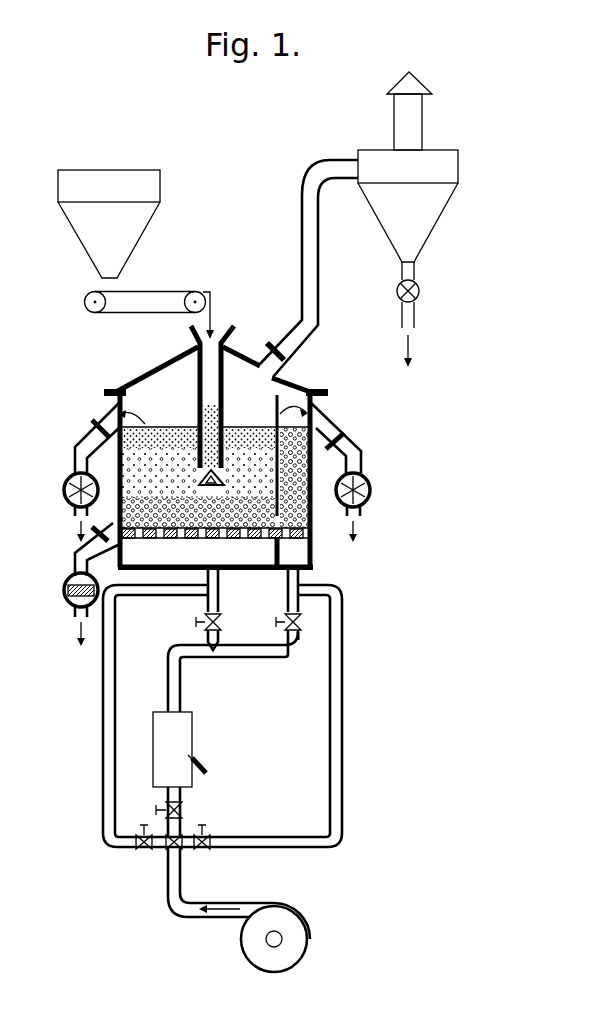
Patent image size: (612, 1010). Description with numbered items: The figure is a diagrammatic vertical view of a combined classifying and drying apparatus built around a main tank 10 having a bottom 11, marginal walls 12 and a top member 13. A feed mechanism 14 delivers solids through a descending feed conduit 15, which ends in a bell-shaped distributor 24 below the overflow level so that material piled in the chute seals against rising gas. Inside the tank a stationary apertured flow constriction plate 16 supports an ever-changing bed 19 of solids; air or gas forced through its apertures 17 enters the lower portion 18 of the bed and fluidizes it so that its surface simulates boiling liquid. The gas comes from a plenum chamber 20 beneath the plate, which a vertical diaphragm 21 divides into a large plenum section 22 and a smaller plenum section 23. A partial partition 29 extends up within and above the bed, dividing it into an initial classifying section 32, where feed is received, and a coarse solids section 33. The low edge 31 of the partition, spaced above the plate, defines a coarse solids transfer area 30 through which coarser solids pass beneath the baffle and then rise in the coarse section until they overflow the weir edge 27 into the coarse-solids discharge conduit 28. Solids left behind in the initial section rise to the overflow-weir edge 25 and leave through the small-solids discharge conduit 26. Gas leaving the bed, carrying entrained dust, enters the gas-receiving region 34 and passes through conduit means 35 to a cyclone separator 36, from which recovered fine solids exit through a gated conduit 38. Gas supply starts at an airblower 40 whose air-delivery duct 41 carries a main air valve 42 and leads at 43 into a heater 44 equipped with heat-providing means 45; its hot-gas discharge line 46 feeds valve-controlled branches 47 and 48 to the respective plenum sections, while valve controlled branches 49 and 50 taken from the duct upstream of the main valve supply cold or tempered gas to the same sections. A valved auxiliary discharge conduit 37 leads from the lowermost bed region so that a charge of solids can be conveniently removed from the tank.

The main tank 10 is at (260, 332).
The bottom 11 is at (318, 557).
The marginal walls 12 is at (313, 516).
The top member 13 is at (240, 358).
The feed mechanism 14 is at (136, 254).
The feed conduit 15 is at (187, 397).
The flow constriction plate 16 is at (170, 541).
The apertures 17 is at (170, 500).
The lower portion of bed 18 is at (172, 514).
The bed of solids material 19 is at (233, 436).
The plenum chamber 20 is at (280, 572).
The diaphragm 21 is at (274, 553).
The large plenum section 22 is at (219, 553).
The smaller plenum section 23 is at (308, 553).
The bell-shaped distributor 24 is at (200, 480).
The overflow-weir edge 25 is at (114, 420).
The solids-discharge conduit 26 is at (75, 448).
The coarse solids overflow weir edge 27 is at (318, 430).
The coarse-solids discharge conduit 28 is at (358, 449).
The partial partition 29 is at (275, 412).
The coarse solids transfer area 30 is at (253, 513).
The low edge 31 is at (268, 510).
The initial classifying section 32 is at (198, 446).
The coarse solids section 33 is at (296, 478).
The gas-receiving region 34 is at (215, 395).
The conduit means 35 is at (321, 258).
The cyclone separator 36 is at (441, 225).
The auxiliary discharge conduit 37 is at (73, 560).
The gated conduit 38 is at (401, 329).
The airblower 40 is at (306, 946).
The air-delivery duct 41 is at (186, 900).
The main air valve 42 is at (184, 812).
The lead into heater 43 is at (181, 793).
The heater 44 is at (153, 756).
The heat-providing means 45 is at (201, 764).
The hot-gas discharge line 46 is at (181, 691).
The valve-controlled branch 47 is at (219, 628).
The valve-controlled branch 48 is at (286, 652).
The valve controlled branch 49 is at (104, 740).
The valve controlled branch 50 is at (343, 721).